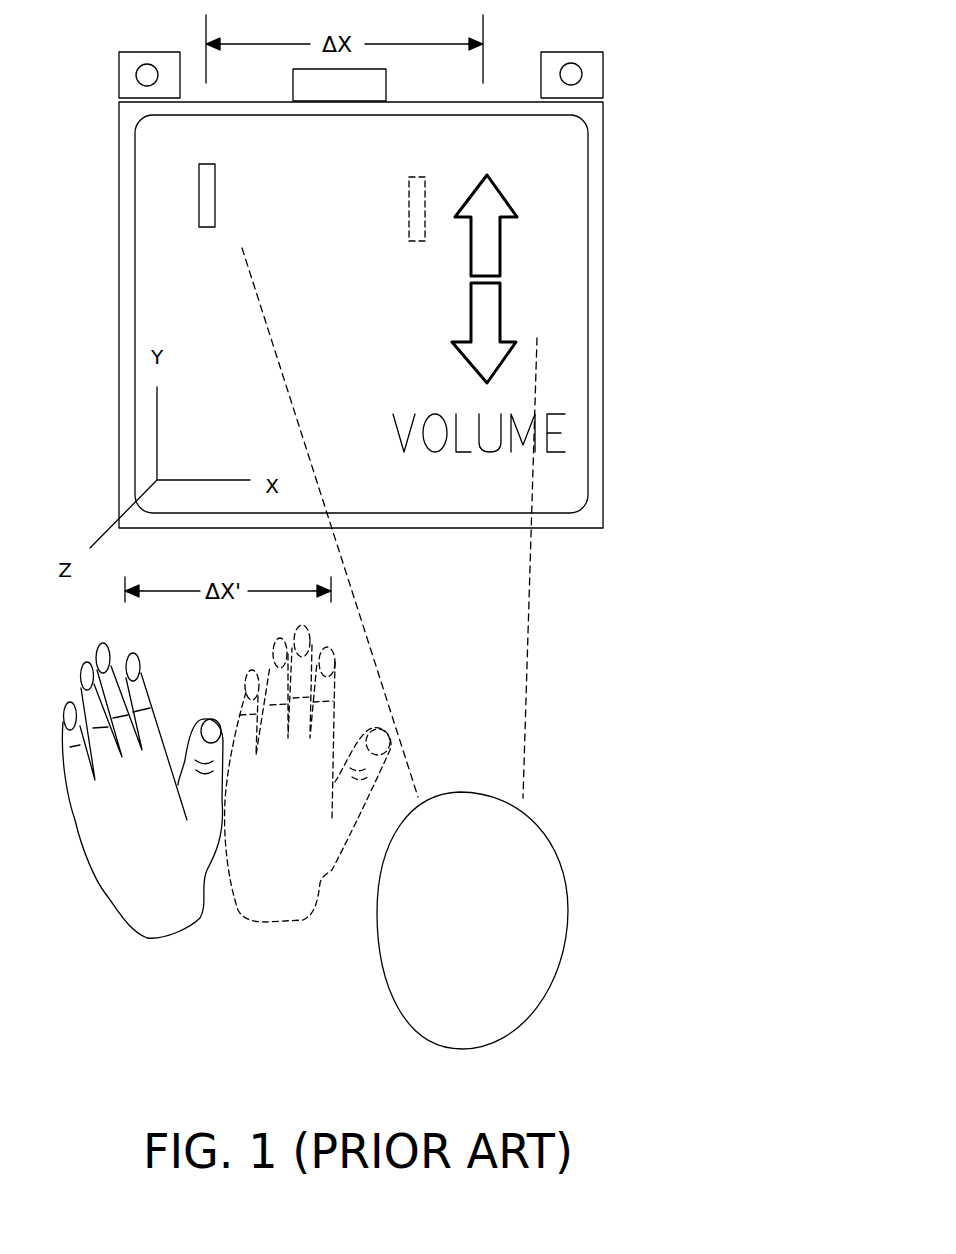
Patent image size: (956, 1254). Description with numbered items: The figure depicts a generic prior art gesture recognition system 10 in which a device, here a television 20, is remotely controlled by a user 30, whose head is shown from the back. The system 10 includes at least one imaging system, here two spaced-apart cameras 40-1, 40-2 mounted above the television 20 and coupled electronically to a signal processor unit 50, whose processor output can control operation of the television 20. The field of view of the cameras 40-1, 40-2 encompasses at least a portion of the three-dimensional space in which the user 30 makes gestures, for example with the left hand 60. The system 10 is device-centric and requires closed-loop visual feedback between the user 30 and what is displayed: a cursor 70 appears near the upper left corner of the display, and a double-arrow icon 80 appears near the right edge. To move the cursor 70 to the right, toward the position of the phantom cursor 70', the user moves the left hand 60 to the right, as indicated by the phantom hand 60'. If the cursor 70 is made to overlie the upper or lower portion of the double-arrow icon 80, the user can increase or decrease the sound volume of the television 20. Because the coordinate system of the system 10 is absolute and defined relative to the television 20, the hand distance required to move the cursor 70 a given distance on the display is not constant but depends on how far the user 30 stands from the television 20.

The prior art system 10 is at (702, 187).
The television 20 is at (143, 280).
The user 30 is at (583, 889).
The camera 40-1 is at (142, 47).
The camera 40-2 is at (562, 47).
The signal processor unit 50 is at (370, 88).
The left hand 60 is at (120, 790).
The phantom hand 60' is at (308, 793).
The cursor 70 is at (249, 195).
The phantom cursor 70' is at (372, 215).
The double-arrow icon 80 is at (450, 285).